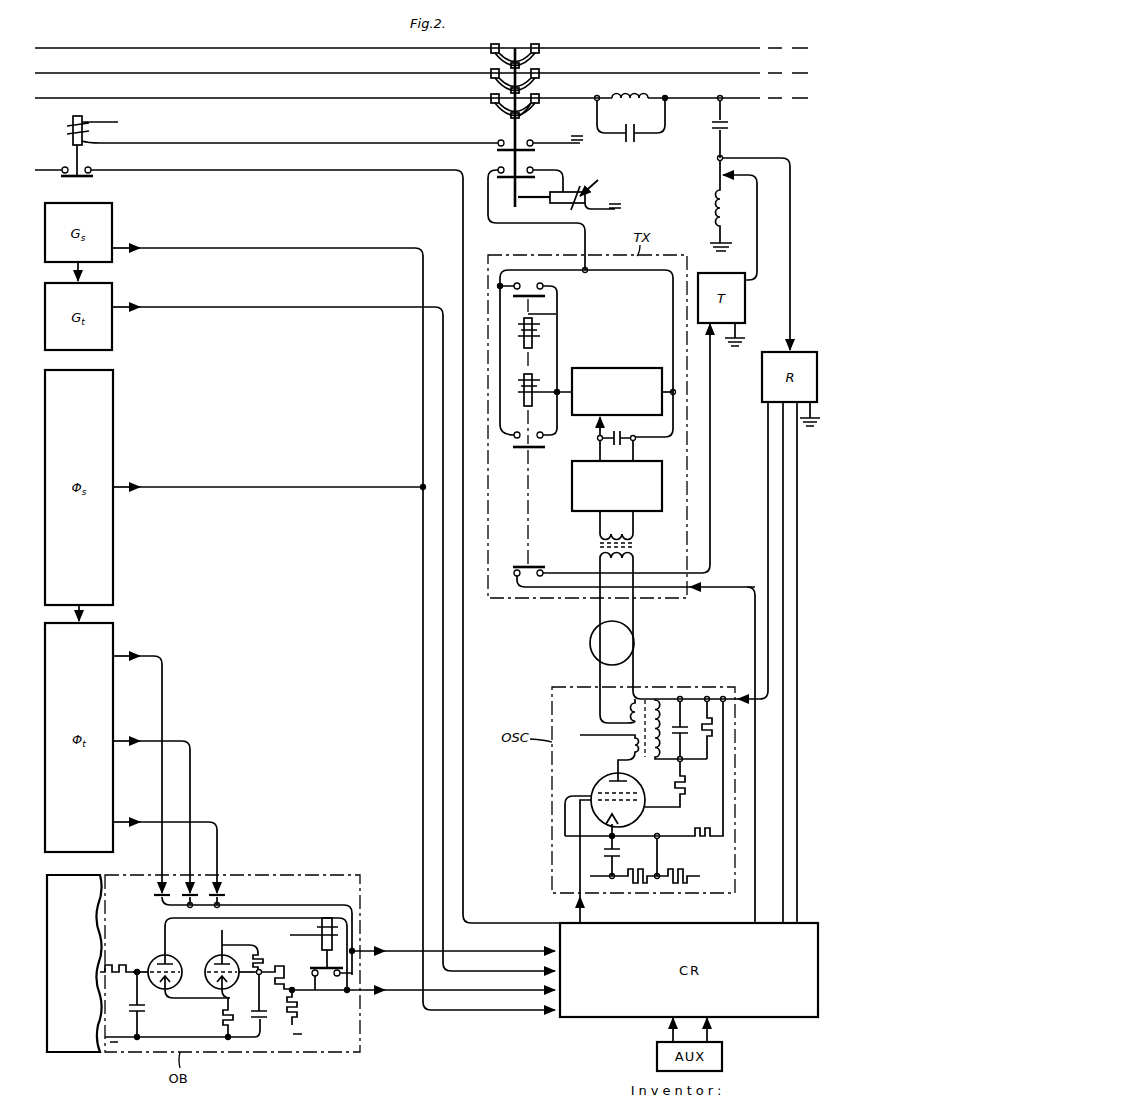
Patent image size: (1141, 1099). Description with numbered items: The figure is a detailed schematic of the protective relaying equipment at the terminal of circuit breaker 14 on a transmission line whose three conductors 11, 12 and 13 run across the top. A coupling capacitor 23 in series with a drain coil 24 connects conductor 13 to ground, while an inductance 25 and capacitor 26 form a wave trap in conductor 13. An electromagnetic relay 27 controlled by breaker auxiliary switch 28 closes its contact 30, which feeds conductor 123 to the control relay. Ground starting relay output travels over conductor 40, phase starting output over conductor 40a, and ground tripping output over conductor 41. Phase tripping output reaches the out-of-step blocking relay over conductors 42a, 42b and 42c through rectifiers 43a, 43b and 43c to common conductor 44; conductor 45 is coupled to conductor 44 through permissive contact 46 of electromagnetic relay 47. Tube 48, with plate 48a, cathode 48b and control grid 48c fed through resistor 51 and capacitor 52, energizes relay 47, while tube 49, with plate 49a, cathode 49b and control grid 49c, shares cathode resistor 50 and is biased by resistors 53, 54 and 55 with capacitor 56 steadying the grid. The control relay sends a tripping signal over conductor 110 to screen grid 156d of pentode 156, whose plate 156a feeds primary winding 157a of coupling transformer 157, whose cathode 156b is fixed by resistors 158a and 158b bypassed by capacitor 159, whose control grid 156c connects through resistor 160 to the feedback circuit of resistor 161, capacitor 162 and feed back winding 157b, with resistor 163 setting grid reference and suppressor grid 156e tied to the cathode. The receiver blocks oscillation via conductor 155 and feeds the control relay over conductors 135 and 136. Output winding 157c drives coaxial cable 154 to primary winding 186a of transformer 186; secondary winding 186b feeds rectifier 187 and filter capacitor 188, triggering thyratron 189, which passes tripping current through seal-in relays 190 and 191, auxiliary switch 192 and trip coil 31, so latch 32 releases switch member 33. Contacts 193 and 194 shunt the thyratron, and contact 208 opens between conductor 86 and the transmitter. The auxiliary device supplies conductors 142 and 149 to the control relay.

The conductor 11 is at (750, 48).
The conductor 12 is at (750, 73).
The conductor 13 is at (750, 98).
The circuit breaker 14 is at (482, 132).
The switch member 33 is at (529, 112).
The coupling capacitor 23 is at (730, 127).
The drain coil 24 is at (716, 205).
The inductance 25 is at (643, 98).
The capacitor 26 is at (634, 145).
The electromagnetic relay 27 is at (70, 130).
The auxiliary switch 28 is at (496, 152).
The contact 30 is at (84, 179).
The trip coil 31 is at (595, 181).
The latch 32 is at (546, 204).
The conductor 123 is at (306, 172).
The auxiliary switch 192 is at (503, 181).
The conductor 40 is at (222, 248).
The conductor 41 is at (228, 307).
The conductor 40a is at (243, 487).
The conductor 42a is at (163, 691).
The conductor 42b is at (191, 777).
The conductor 42c is at (218, 847).
The rectifier 43a is at (152, 890).
The rectifier 43b is at (186, 905).
The rectifier 43c is at (228, 890).
The common conductor 44 is at (297, 905).
The conductor 45 is at (362, 996).
The permissive contact 46 is at (322, 978).
The electromagnetic relay 47 is at (338, 929).
The triode vacuum tube 48 is at (160, 956).
The plate 48a is at (172, 962).
The cathode 48b is at (165, 990).
The control grid 48c is at (150, 968).
The triode vacuum tube 49 is at (235, 981).
The plate 49a is at (215, 963).
The cathode 49b is at (221, 992).
The control grid 49c is at (212, 975).
The cathode resistor 50 is at (222, 1022).
The resistor 51 is at (116, 977).
The capacitor 52 is at (128, 1008).
The resistor 53 is at (263, 952).
The resistor 54 is at (285, 967).
The resistor 55 is at (300, 1018).
The capacitor 56 is at (266, 1012).
The conductor 86 is at (755, 913).
The conductor 110 is at (580, 912).
The conductor 135 is at (783, 897).
The conductor 136 is at (798, 897).
The conductor 142 is at (709, 1032).
The conductor 149 is at (672, 1032).
The coaxial cable 154 is at (602, 673).
The conductor 155 is at (768, 684).
The oscillator pentode vacuum tube 156 is at (630, 783).
The plate 156a is at (616, 776).
The cathode 156b is at (640, 822).
The control grid 156c is at (600, 836).
The screen grid 156d is at (645, 800).
The suppressor grid 156e is at (596, 792).
The coupling transformer 157 is at (648, 700).
The primary winding 157a is at (630, 749).
The feed back winding 157b is at (661, 708).
The output winding 157c is at (630, 709).
The voltage dividing resistor 158a is at (680, 868).
The voltage dividing resistor 158b is at (636, 868).
The capacitor 159 is at (605, 852).
The resistor 160 is at (687, 788).
The resistor 161 is at (709, 737).
The capacitor 162 is at (684, 725).
The resistor 163 is at (707, 828).
The transformer 186 is at (570, 555).
The primary winding 186a is at (630, 568).
The secondary winding 186b is at (632, 533).
The rectifier element 187 is at (572, 496).
The filter capacitor 188 is at (625, 437).
The thyratron element 189 is at (619, 368).
The seal-in electromagnetic relay 190 is at (540, 328).
The seal-in electromagnetic relay 191 is at (518, 384).
The contact 193 is at (546, 299).
The contact 194 is at (514, 452).
The contact 208 is at (515, 566).